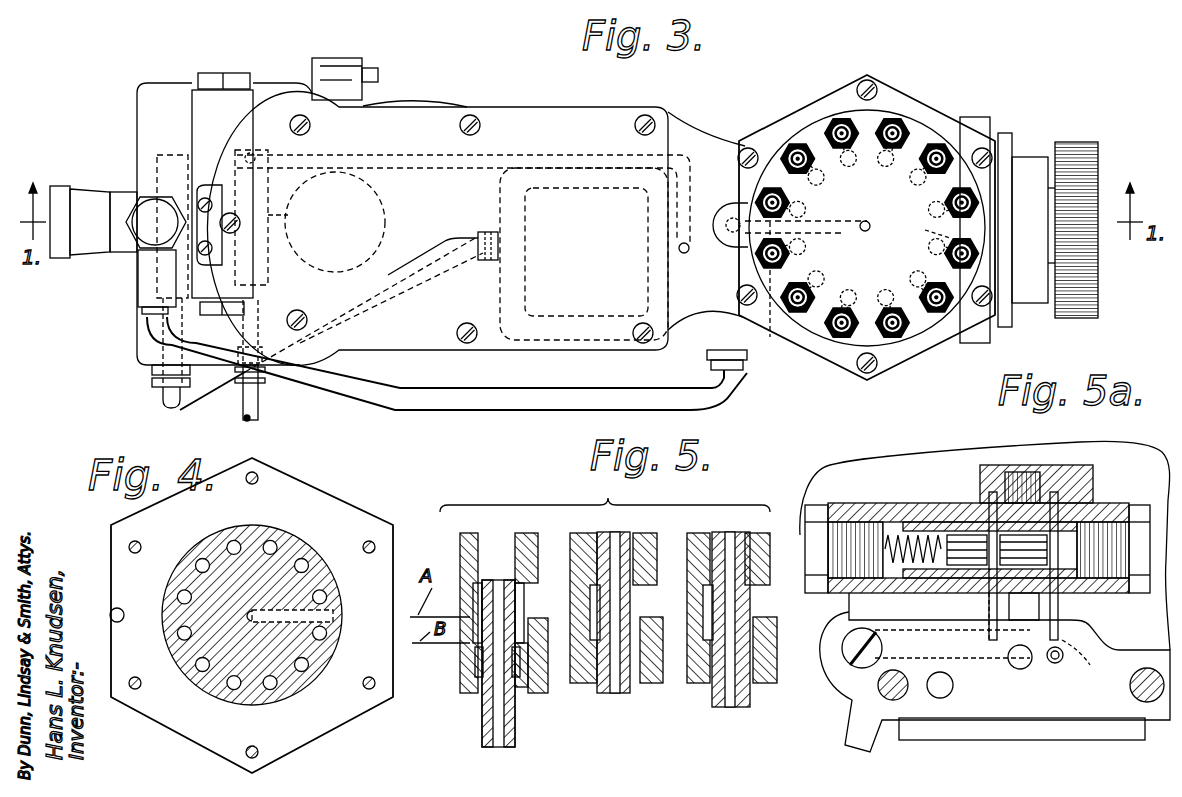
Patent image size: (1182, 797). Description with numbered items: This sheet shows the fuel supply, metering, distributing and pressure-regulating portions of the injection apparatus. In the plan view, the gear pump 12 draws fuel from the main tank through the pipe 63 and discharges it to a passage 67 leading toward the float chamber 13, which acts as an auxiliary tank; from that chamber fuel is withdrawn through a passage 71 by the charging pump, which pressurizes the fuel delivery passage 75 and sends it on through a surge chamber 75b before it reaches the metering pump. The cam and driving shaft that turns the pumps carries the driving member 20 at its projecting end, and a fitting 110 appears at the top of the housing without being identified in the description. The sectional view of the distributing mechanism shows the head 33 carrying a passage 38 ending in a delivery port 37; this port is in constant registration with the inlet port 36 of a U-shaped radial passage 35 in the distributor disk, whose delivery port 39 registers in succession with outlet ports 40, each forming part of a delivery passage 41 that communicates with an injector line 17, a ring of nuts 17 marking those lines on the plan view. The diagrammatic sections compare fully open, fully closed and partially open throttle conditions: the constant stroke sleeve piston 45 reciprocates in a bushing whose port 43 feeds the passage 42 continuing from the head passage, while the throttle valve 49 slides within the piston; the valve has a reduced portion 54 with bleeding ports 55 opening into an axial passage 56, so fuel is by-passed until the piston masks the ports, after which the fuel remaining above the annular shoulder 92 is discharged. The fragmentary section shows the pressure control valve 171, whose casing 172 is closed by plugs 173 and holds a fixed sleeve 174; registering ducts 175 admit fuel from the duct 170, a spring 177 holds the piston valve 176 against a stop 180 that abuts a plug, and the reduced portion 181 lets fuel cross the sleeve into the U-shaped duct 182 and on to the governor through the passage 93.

In FIG. 3, the gear pump 12 is at (265, 268).
In FIG. 3, the float chamber 13 is at (535, 282).
In FIG. 3, the injector line 17 is at (936, 305).
In FIG. 3, the driving member 20 is at (1085, 142).
In FIG. 4, the head 33 is at (210, 680).
In FIG. 4, the U-shaped radial passage 35 is at (305, 645).
In FIG. 4, the inlet port 36 is at (250, 614).
In FIG. 3, the delivery port 37 is at (865, 220).
In FIG. 3, the passage 38 is at (846, 234).
In FIG. 4, the delivery port 39 is at (333, 616).
In FIG. 3, the outlet ports 40 is at (928, 208).
In FIG. 4, the outlet ports 40 is at (270, 546).
In FIG. 3, the delivery passage 41 is at (924, 226).
In FIG. 3, the passage 42 is at (725, 237).
In FIG. 4, the passage 42 is at (122, 608).
In FIG. 5, the passage 42 is at (530, 584).
In FIG. 5, the port 43 is at (541, 620).
In FIG. 5, the sleeve piston 45 is at (529, 684).
In FIG. 5, the throttle valve 49 is at (482, 726).
In FIG. 5, the reduced portion 54 is at (474, 660).
In FIG. 5, the bleeding ports 55 is at (476, 683).
In FIG. 5, the axial passage 56 is at (516, 720).
In FIG. 3, the pipe 63 is at (244, 413).
In FIG. 3, the passage 67 is at (495, 152).
In FIG. 3, the passage 71 is at (385, 283).
In FIG. 3, the fuel delivery passage 75 is at (450, 411).
In FIG. 3, the surge chamber 75b is at (150, 205).
In FIG. 5, the annular shoulder 92 is at (755, 612).
In FIG. 3, the passage 93 is at (285, 215).
In FIG. 5A, the passage 93 is at (1083, 664).
In FIG. 3, the fitting 110 is at (378, 75).
In FIG. 5A, the duct 170 is at (1012, 670).
In FIG. 3, the pressure control valve 171 is at (192, 122).
In FIG. 5A, the pressure control valve 171 is at (910, 496).
In FIG. 3, the casing 172 is at (200, 137).
In FIG. 5A, the casing 172 is at (866, 504).
In FIG. 3, the plugs 173 is at (237, 80).
In FIG. 5A, the plugs 173 is at (813, 535).
In FIG. 5A, the sleeve 174 is at (948, 535).
In FIG. 5A, the registering ducts 175 is at (989, 612).
In FIG. 5A, the piston valve 176 is at (972, 522).
In FIG. 5A, the spring 177 is at (927, 503).
In FIG. 5A, the stop 180 is at (1100, 525).
In FIG. 5A, the reduced portion 181 is at (989, 592).
In FIG. 5A, the U-shaped duct 182 is at (1035, 466).